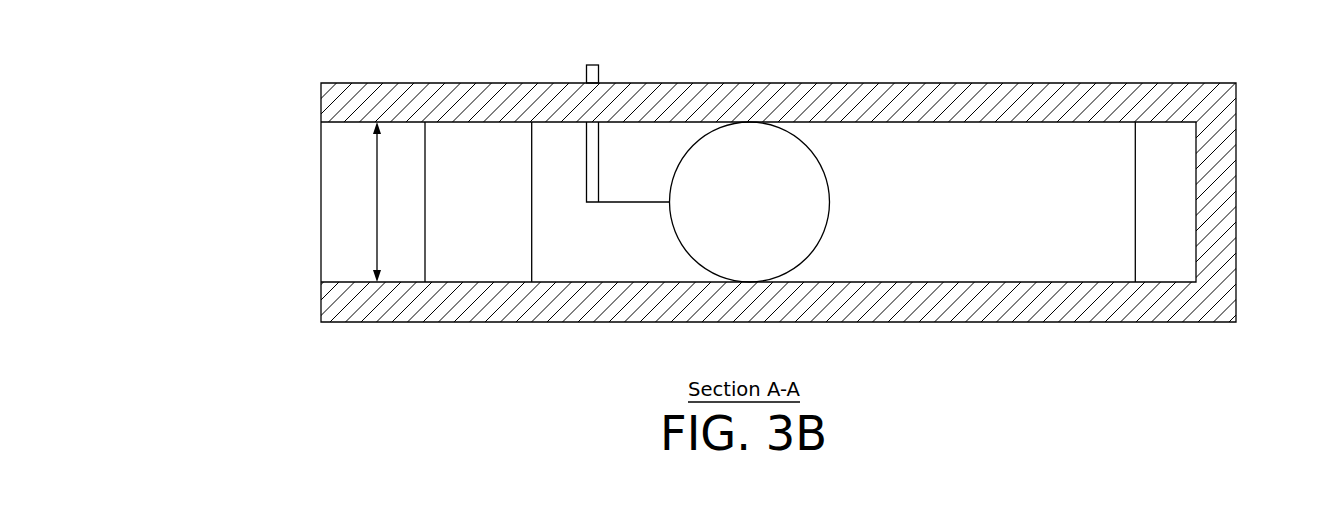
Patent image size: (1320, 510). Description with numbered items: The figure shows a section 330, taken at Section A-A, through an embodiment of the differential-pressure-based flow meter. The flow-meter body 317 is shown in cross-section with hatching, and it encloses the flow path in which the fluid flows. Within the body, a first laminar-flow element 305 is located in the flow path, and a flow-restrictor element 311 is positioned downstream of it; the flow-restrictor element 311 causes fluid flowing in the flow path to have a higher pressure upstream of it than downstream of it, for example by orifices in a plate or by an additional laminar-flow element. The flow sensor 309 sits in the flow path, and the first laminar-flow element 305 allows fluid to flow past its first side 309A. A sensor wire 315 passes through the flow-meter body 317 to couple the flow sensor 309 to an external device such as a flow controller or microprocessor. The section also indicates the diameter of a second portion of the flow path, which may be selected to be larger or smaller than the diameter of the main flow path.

The section 330 is at (213, 43).
The first laminar-flow element 305 is at (465, 160).
The sensor wire 315 is at (593, 64).
The first side 309A is at (760, 143).
The flow sensor 309 is at (848, 180).
The flow-meter body 317 is at (1223, 159).
The flow-restrictor element 311 is at (1170, 240).